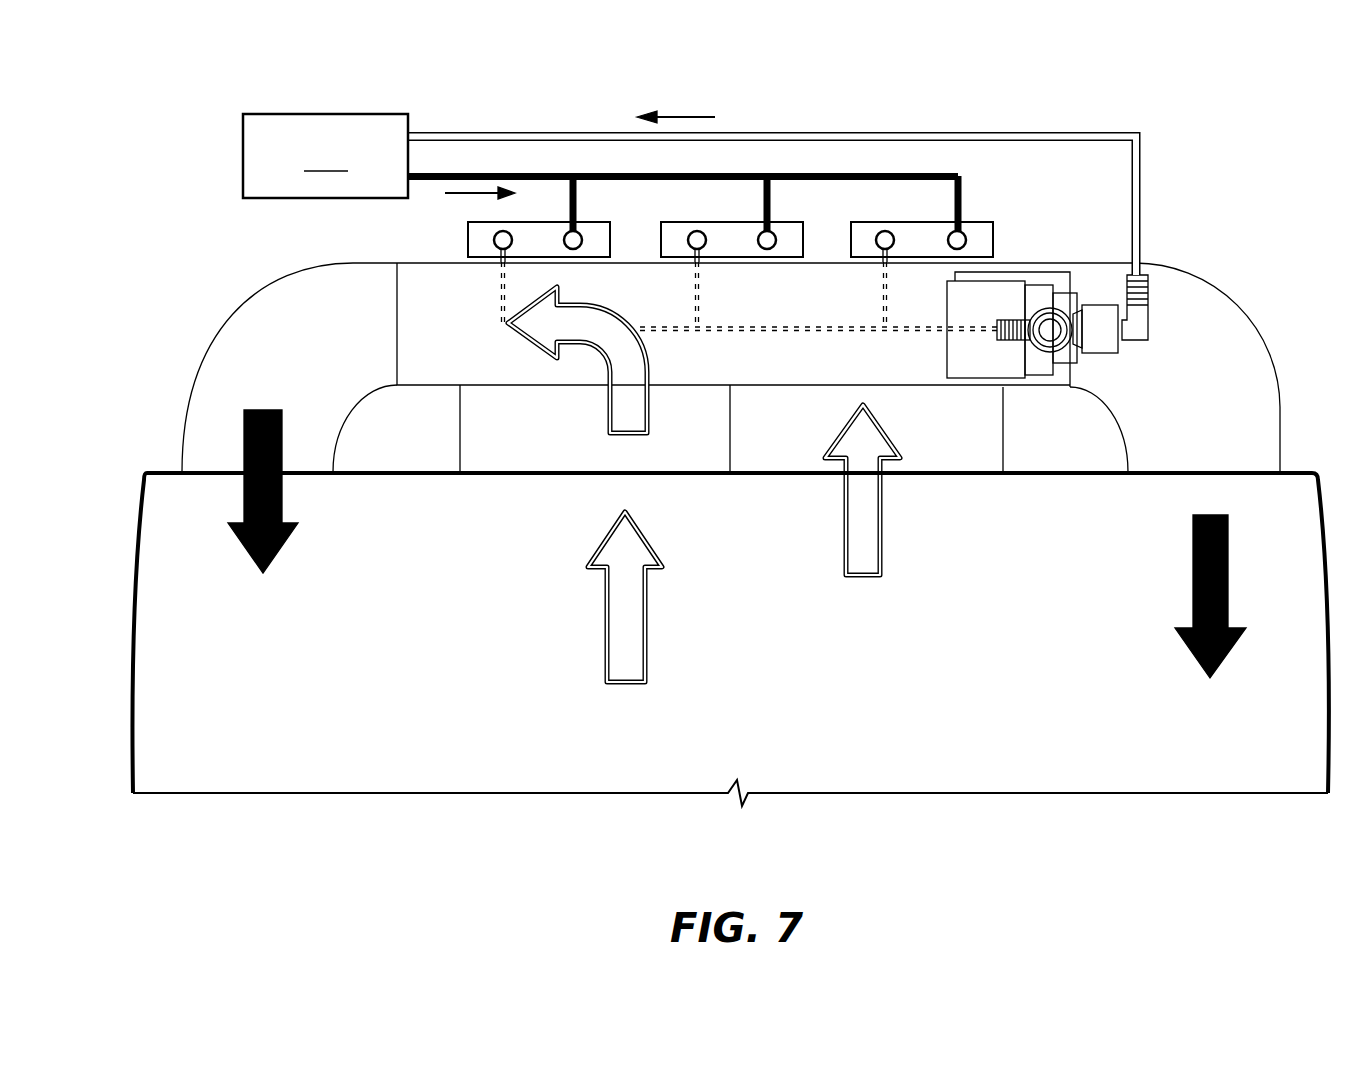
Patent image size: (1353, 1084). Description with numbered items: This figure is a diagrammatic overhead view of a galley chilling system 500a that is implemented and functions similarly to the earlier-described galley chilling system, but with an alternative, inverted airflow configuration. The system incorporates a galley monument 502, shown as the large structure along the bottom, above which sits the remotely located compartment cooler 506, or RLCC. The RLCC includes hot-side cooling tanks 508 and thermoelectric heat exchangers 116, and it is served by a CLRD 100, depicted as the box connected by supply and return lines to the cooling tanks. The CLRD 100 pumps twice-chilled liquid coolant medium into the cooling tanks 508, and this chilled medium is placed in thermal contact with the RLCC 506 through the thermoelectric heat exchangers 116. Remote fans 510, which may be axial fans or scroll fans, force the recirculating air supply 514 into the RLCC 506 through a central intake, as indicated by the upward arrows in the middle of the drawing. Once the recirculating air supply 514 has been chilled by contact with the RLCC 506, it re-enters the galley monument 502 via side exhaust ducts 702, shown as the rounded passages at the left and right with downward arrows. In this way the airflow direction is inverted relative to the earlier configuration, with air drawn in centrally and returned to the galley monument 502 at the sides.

The galley chilling system 500a is at (701, 457).
The CLRD 100 is at (689, 193).
The thermoelectric heat exchangers 116 is at (543, 258).
The hot-side cooling tanks 508 is at (920, 240).
The remotely located compartment cooler 506 is at (440, 308).
The side exhaust ducts 702 is at (248, 358).
The remote fans 510 is at (950, 453).
The galley monument 502 is at (142, 500).
The recirculating air supply 514 is at (627, 607).